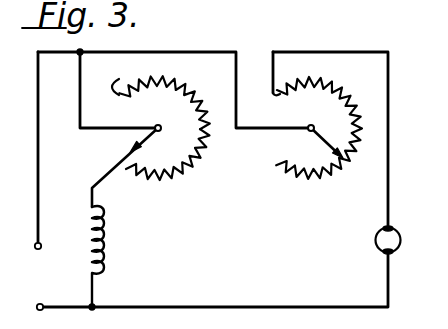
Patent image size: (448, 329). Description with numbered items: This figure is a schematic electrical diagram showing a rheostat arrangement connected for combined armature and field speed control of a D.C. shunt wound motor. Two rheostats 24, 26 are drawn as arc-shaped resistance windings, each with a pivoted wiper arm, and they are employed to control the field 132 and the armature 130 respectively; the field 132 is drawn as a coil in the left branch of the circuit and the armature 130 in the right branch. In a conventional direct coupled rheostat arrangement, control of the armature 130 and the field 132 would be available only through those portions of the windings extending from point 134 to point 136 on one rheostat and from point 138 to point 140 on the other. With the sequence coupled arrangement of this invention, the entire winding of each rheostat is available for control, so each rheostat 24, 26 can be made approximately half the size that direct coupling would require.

The rheostat 24 is at (177, 180).
The rheostat 26 is at (307, 177).
The armature 130 is at (386, 242).
The field 132 is at (98, 256).
The point 134 is at (100, 70).
The point 136 is at (222, 80).
The point 138 is at (360, 75).
The point 140 is at (283, 158).